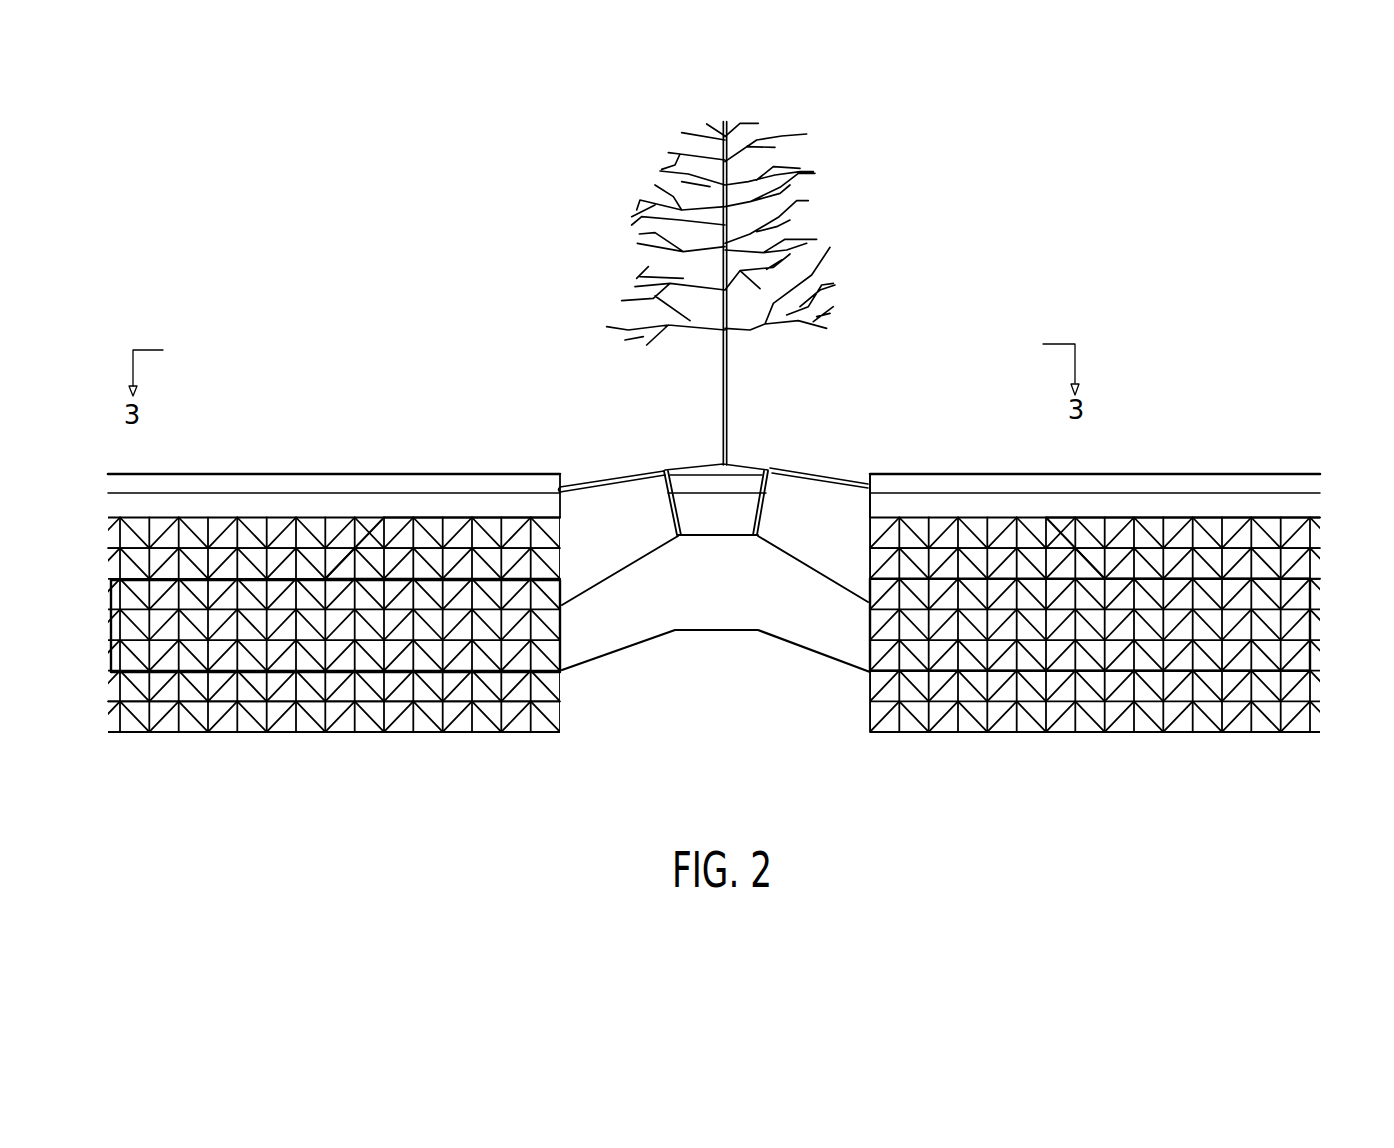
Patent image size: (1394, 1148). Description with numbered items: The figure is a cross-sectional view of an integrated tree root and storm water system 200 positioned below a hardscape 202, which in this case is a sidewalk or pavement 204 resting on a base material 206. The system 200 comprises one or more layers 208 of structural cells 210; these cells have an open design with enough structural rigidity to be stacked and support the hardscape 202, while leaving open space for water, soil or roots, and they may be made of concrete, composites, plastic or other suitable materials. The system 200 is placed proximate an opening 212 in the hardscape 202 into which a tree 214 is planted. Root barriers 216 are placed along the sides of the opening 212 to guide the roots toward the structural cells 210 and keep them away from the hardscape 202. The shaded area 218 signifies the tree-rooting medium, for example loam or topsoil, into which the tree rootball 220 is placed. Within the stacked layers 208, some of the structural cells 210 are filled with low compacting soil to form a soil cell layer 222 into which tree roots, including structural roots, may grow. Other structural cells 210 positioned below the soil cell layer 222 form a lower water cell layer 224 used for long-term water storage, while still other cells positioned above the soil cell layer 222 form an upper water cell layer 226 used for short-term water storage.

The integrated tree root and storm water system 200 is at (492, 772).
The hardscape 202 is at (96, 474).
The sidewalk or pavement 204 is at (352, 483).
The base material 206 is at (478, 503).
The layers 208 is at (1318, 547).
The structural cells 210 is at (1264, 527).
The openings 212 is at (864, 420).
The trees 214 is at (728, 368).
The root barriers 216 is at (560, 517).
The shaded area 218 is at (710, 632).
The tree rootball 220 is at (740, 523).
The soil cell layer 222 is at (96, 583).
The lower water cell layer 224 is at (96, 674).
The upper water cell layer 226 is at (96, 521).